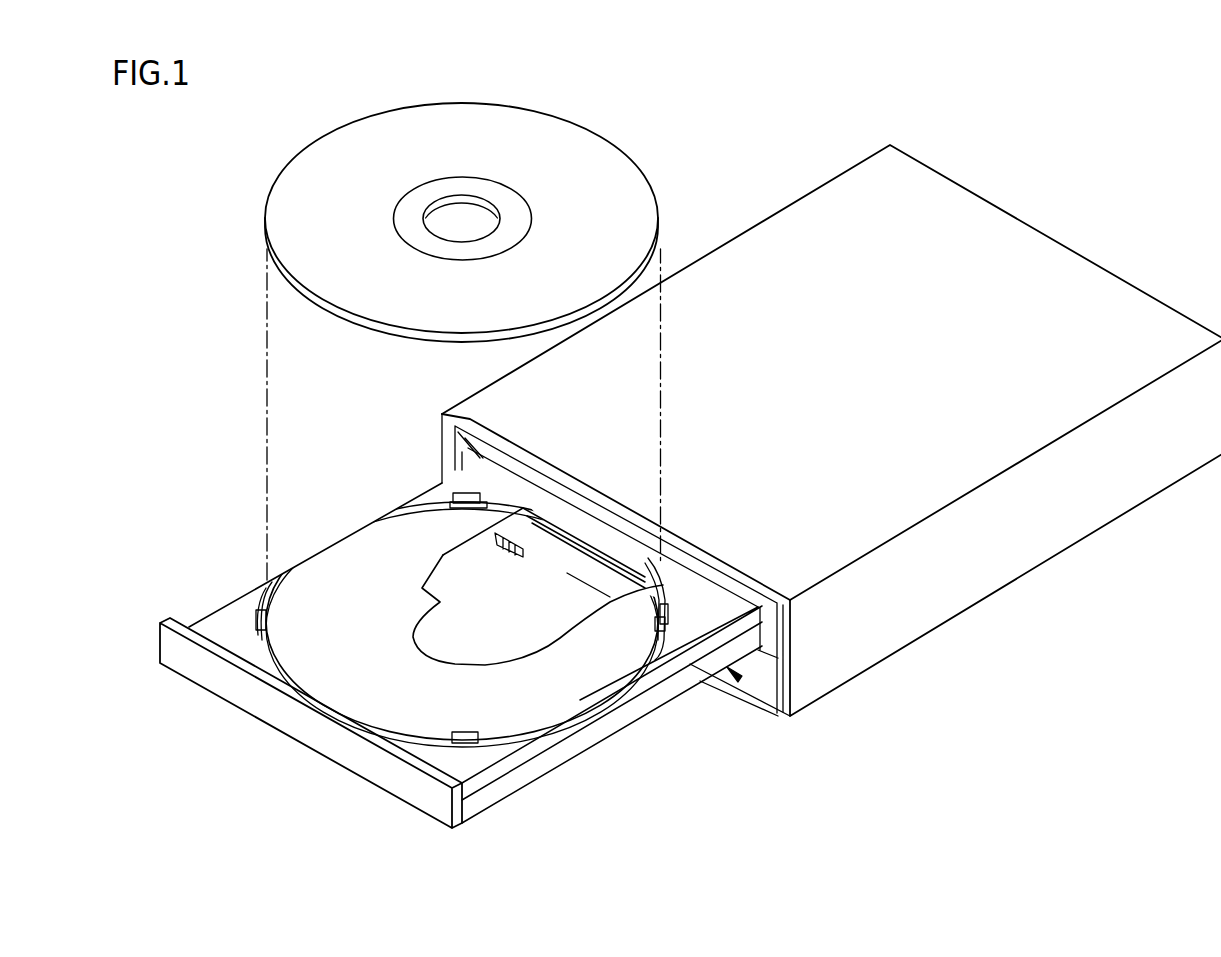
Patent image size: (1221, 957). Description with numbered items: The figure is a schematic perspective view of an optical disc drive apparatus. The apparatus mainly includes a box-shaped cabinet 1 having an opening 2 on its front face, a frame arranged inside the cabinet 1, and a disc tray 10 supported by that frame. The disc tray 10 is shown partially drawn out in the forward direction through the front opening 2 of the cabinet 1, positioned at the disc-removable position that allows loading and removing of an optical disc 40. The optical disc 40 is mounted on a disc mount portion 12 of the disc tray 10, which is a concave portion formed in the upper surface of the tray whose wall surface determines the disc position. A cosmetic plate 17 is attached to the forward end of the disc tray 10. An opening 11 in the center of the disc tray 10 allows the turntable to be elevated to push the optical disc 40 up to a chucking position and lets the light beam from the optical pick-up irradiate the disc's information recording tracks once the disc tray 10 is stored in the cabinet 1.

The cabinet 1 is at (831, 450).
The opening 2 is at (717, 588).
The disc tray 10 is at (460, 655).
The opening 11 is at (507, 650).
The disc mount portion 12 is at (487, 722).
The cosmetic plate 17 is at (368, 763).
The optical disc 40 is at (310, 178).